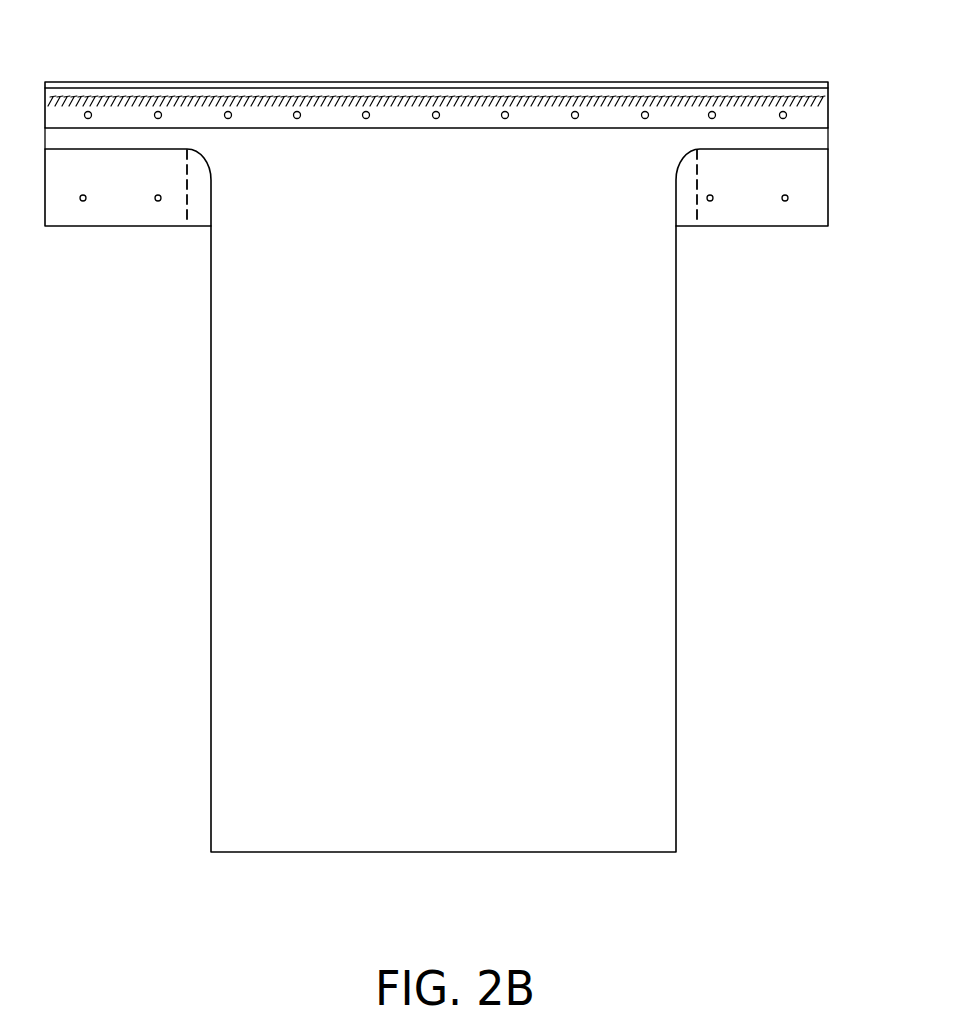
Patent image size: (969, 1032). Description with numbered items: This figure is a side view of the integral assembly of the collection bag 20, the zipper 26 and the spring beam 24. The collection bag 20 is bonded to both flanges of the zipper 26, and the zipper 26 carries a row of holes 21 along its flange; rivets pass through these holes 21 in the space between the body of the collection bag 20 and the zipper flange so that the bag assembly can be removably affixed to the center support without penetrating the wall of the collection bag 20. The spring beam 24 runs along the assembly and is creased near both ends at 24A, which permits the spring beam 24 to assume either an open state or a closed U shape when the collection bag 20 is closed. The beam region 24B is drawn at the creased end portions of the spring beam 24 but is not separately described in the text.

The collection bag 20 is at (230, 814).
The holes 21 is at (297, 119).
The spring beam 24 is at (755, 226).
The crease 24A is at (187, 228).
The flange mounting holes 24B is at (83, 202).
The zipper 26 is at (638, 82).